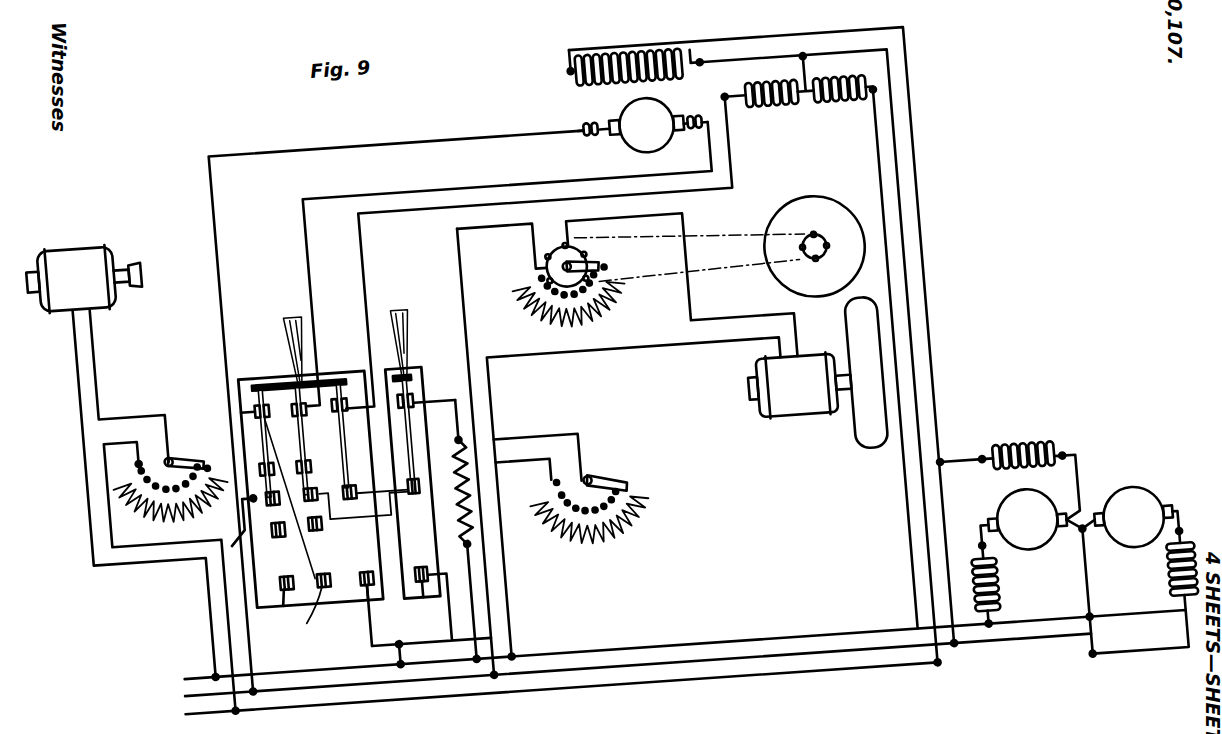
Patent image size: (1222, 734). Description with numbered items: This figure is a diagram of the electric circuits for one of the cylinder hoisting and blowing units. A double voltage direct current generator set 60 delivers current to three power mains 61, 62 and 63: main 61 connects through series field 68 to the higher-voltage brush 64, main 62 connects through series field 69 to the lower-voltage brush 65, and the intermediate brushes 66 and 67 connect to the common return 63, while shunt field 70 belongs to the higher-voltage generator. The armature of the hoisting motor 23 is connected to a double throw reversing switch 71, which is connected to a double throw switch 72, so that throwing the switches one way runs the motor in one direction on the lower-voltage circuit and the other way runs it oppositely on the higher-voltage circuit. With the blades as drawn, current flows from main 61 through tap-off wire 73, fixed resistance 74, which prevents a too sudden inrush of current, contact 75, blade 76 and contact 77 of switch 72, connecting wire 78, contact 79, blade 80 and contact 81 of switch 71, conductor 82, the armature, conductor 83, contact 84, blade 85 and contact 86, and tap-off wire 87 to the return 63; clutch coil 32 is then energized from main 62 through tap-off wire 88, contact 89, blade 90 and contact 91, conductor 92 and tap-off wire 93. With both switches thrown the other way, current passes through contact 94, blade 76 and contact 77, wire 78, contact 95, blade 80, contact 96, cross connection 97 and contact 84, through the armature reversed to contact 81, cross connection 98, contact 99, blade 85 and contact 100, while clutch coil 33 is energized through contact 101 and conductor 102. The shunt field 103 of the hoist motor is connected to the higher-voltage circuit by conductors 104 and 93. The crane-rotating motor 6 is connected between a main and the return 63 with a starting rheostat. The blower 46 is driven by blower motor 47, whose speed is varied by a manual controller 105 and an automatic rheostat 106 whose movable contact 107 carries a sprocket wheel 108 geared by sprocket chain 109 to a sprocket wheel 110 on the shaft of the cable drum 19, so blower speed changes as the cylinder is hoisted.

The crane motor 6 is at (92, 214).
The cable drum 19 is at (804, 221).
The hoisting motor 23 is at (655, 140).
The clutch coil 32 is at (800, 120).
The clutch coil 33 is at (870, 120).
The blower 46 is at (858, 462).
The blower motor 47 is at (803, 427).
The double voltage direct current generator set 60 is at (1074, 591).
The power main 61 is at (650, 648).
The power main 62 is at (735, 665).
The common return 63 is at (720, 685).
The brush 64 is at (976, 549).
The brush 65 is at (1155, 544).
The intermediate brush 66 is at (1049, 545).
The intermediate brush 67 is at (1087, 547).
The series field 68 is at (984, 612).
The series field 69 is at (1151, 616).
The shunt field 70 is at (1018, 472).
The double throw reversing switch 71 is at (334, 356).
The double throw switch 72 is at (419, 346).
The tap-off wire 73 is at (474, 565).
The fixed resistance 74 is at (456, 492).
The contact 75 is at (416, 383).
The blade 76 is at (416, 414).
The contact 77 is at (407, 481).
The connecting wire 78 is at (350, 500).
The contact 79 is at (309, 446).
The blade 80 is at (308, 391).
The contact 81 is at (298, 359).
The conductor 82 is at (323, 238).
The conductor 83 is at (233, 213).
The contact 84 is at (242, 388).
The blade 85 is at (256, 430).
The contact 86 is at (265, 444).
The tap-off wire 87 is at (236, 505).
The tap-off wire 88 is at (371, 619).
The contact 89 is at (344, 481).
The blade 90 is at (348, 462).
The contact 91 is at (349, 390).
The conductor 92 is at (434, 200).
The tap-off wire 93 is at (916, 150).
The contact 94 is at (424, 590).
The contact 95 is at (306, 510).
The contact 96 is at (311, 568).
The cross connection 97 is at (307, 618).
The cross connection 98 is at (268, 514).
The contact 99 is at (266, 584).
The contact 100 is at (230, 532).
The contact 101 is at (356, 575).
The conductor 102 is at (896, 554).
The shunt field 103 is at (621, 86).
The conductor 104 is at (933, 382).
The speed controller 105 is at (588, 476).
The speed controller 106 is at (618, 310).
The movable contact 107 is at (606, 258).
The sprocket wheel 108 is at (558, 260).
The sprocket chain 109 is at (752, 277).
The sprocket wheel 110 is at (832, 255).